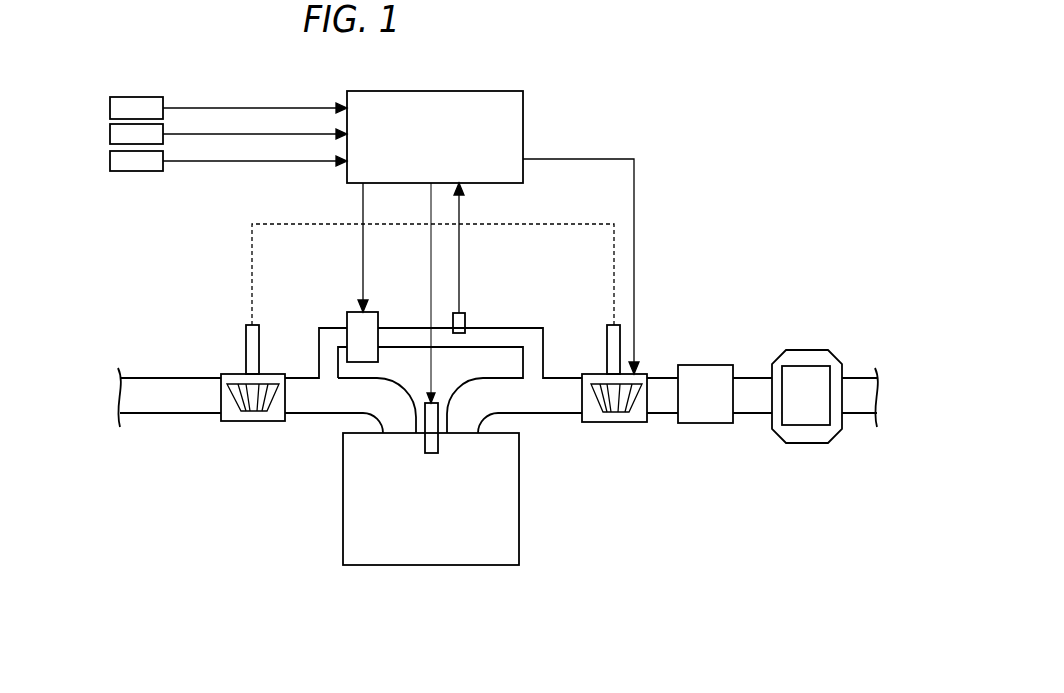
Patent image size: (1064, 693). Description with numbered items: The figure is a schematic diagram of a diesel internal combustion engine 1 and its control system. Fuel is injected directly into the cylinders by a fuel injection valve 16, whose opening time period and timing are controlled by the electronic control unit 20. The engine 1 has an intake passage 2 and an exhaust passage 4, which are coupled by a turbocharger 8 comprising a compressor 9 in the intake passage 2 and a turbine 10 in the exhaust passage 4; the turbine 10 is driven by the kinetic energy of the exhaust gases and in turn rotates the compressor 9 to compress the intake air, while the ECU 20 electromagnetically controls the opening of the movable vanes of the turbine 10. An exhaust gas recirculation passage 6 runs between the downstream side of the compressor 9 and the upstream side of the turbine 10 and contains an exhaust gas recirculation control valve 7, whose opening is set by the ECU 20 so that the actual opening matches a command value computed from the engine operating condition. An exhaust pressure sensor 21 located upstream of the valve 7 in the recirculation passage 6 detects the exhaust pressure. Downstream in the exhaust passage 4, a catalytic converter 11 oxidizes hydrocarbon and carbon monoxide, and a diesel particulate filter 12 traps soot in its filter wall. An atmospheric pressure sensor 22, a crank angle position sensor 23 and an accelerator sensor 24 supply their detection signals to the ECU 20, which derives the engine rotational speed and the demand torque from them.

The internal combustion engine 1 is at (402, 565).
The intake passage 2 is at (302, 375).
The exhaust passage 4 is at (552, 414).
The exhaust gas recirculation passage 6 is at (483, 328).
The exhaust gas recirculation control valve 7 is at (353, 308).
The turbocharger 8 is at (234, 270).
The compressor 9 is at (258, 421).
The turbine 10 is at (612, 423).
The catalytic converter 11 is at (685, 365).
The diesel particulate filter 12 is at (802, 425).
The fuel injection valve 16 is at (438, 400).
The electronic control unit 20 is at (393, 91).
The exhaust pressure sensor 21 is at (463, 310).
The atmospheric pressure sensor 22 is at (109, 102).
The crank angle position sensor 23 is at (109, 128).
The accelerator sensor 24 is at (109, 155).